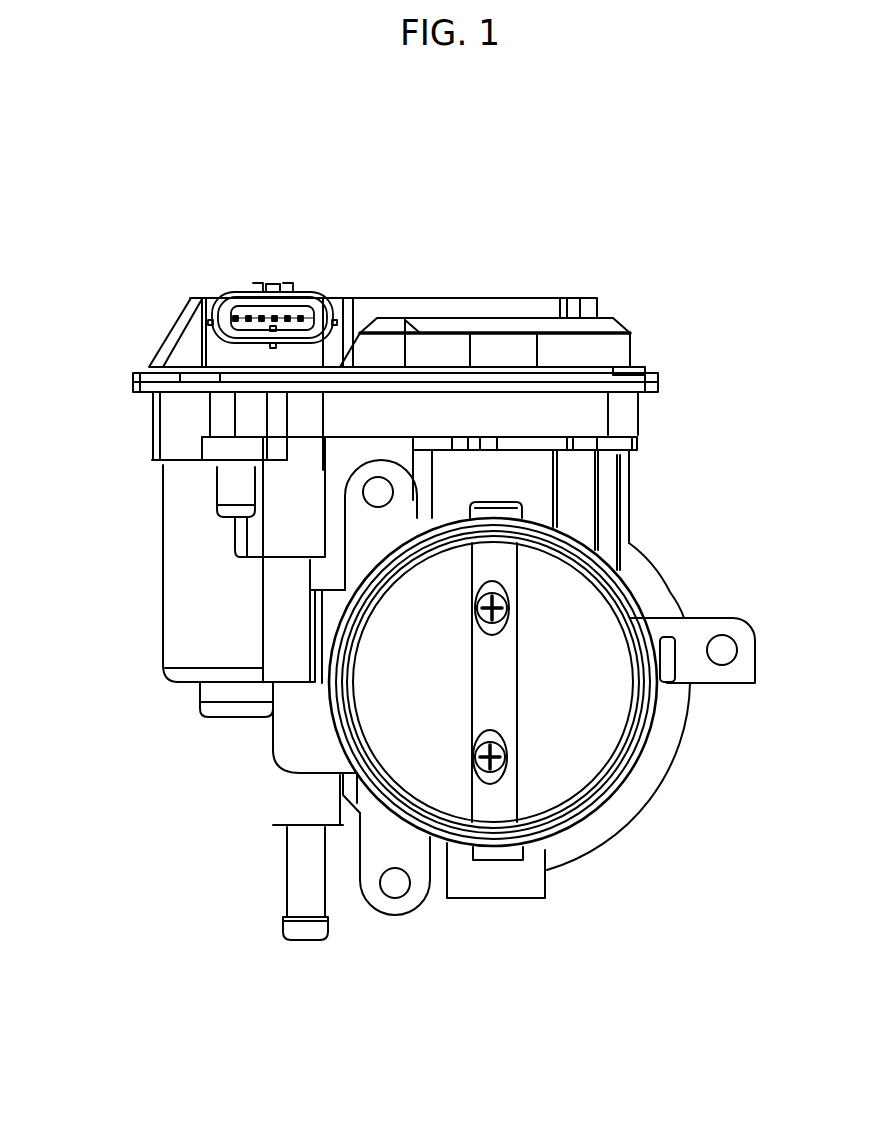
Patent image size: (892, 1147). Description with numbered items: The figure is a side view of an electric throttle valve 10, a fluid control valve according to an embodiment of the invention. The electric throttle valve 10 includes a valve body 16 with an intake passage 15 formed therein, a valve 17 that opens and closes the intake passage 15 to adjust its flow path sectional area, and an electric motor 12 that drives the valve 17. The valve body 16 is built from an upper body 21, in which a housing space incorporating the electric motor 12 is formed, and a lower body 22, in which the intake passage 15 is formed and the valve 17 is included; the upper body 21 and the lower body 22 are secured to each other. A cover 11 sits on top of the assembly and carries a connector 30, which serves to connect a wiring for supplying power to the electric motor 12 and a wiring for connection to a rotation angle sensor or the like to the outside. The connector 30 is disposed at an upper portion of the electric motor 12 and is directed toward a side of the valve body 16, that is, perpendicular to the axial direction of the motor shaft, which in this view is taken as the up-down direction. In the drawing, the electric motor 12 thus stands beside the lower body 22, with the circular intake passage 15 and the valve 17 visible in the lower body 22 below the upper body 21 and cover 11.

The electric throttle valve 10 is at (606, 223).
The cover 11 is at (395, 297).
The electric motor 12 is at (190, 595).
The intake passage 15 is at (560, 822).
The valve body 16 is at (687, 732).
The valve 17 is at (580, 758).
The upper body 21 is at (643, 410).
The lower body 22 is at (630, 498).
The connector 30 is at (240, 292).